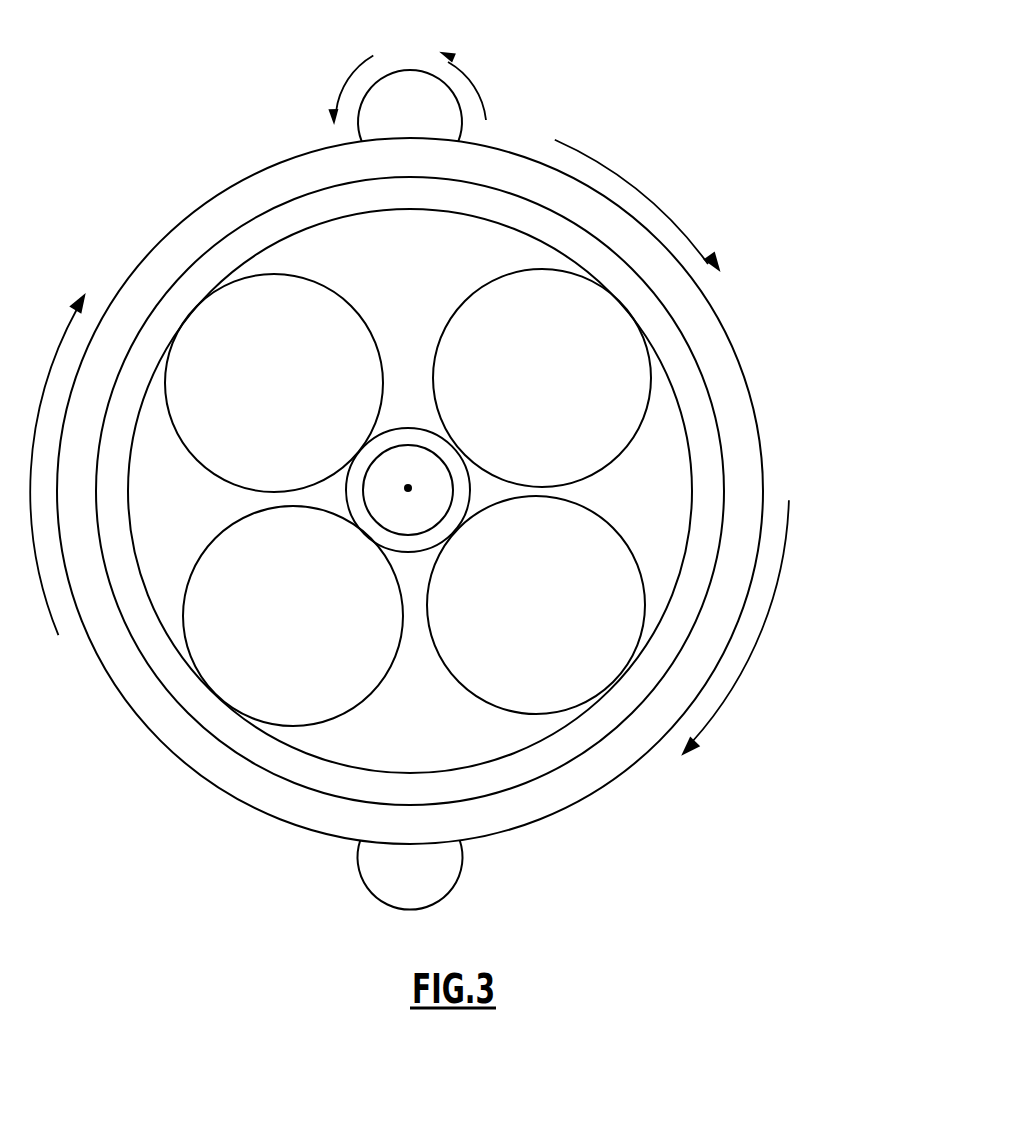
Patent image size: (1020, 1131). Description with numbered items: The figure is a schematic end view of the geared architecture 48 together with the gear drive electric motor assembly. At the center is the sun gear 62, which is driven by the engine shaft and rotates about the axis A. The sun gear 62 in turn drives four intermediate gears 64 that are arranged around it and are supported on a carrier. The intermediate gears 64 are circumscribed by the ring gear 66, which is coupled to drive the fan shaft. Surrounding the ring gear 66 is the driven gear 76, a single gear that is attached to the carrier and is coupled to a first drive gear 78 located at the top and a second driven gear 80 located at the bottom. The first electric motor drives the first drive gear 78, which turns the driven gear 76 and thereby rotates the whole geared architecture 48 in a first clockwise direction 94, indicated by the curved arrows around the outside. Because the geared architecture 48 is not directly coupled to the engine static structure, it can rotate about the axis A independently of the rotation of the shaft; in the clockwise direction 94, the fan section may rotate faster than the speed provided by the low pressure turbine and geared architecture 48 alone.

The geared architecture 48 is at (828, 408).
The sun gear 62 is at (355, 490).
The intermediate gears 64 is at (465, 318).
The ring gear 66 is at (297, 758).
The driven gear 76 is at (717, 358).
The first drive gear 78 is at (405, 82).
The second driven gear 80 is at (394, 883).
The first clockwise direction 94 is at (627, 177).
The axis A is at (408, 470).